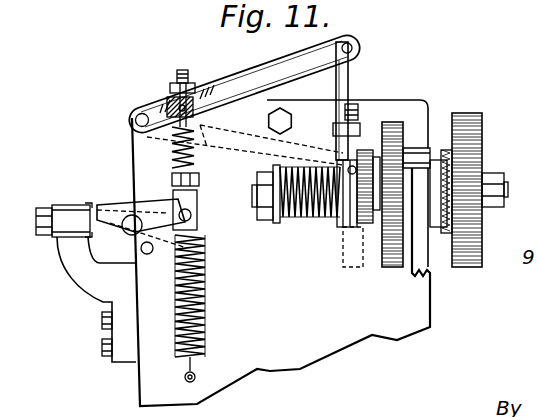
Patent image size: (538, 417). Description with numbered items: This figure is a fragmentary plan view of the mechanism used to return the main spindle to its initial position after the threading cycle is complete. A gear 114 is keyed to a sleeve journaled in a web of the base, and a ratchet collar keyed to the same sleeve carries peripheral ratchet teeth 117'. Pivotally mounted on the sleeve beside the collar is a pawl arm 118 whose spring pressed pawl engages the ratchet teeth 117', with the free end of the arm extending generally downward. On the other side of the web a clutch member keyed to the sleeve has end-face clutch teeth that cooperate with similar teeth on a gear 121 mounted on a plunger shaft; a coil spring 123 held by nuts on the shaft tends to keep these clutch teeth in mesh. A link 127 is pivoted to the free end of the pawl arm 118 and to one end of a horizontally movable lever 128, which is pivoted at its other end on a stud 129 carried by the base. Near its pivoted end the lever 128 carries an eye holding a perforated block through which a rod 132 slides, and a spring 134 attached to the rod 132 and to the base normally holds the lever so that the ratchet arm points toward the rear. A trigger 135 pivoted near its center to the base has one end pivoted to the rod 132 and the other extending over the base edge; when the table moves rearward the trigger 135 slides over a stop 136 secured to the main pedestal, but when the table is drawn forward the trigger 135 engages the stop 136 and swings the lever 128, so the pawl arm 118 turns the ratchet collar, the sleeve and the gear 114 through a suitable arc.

The gear 114 is at (397, 262).
The peripheral ratchet teeth 117' is at (336, 213).
The pawl arm 118 is at (358, 112).
The gear 121 is at (463, 117).
The coil spring 123 is at (285, 216).
The link 127 is at (346, 76).
The lever 128 is at (252, 84).
The stud 129 is at (129, 122).
The rod 132 is at (187, 62).
The spring 134 is at (205, 280).
The trigger 135 is at (163, 203).
The stop 136 is at (92, 215).